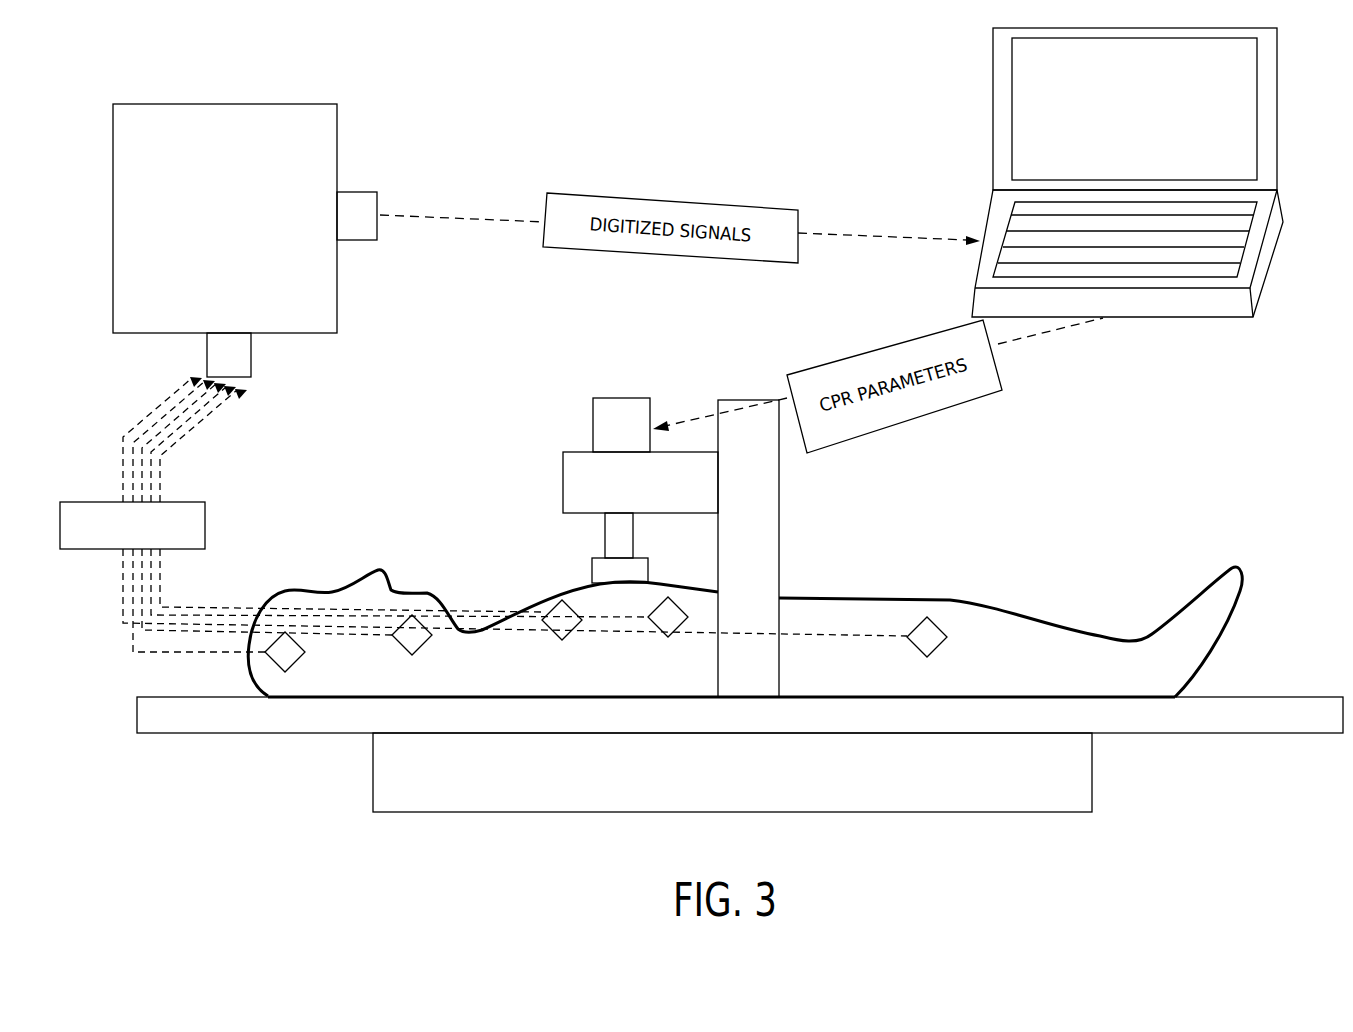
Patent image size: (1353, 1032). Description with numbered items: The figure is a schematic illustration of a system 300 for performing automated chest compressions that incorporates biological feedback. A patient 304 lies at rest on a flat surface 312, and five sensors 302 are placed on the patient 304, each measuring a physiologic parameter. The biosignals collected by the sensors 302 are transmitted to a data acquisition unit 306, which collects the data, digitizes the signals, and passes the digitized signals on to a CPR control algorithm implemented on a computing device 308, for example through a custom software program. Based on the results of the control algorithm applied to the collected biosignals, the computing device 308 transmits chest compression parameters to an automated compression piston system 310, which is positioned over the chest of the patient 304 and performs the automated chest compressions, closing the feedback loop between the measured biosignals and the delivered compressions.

The system 300 is at (254, 830).
The sensors 302 is at (405, 657).
The patient 304 is at (1010, 680).
The data acquisition unit 306 is at (224, 103).
The computing device 308 is at (993, 93).
The automated compression piston system 310 is at (563, 487).
The flat surface 312 is at (1293, 708).